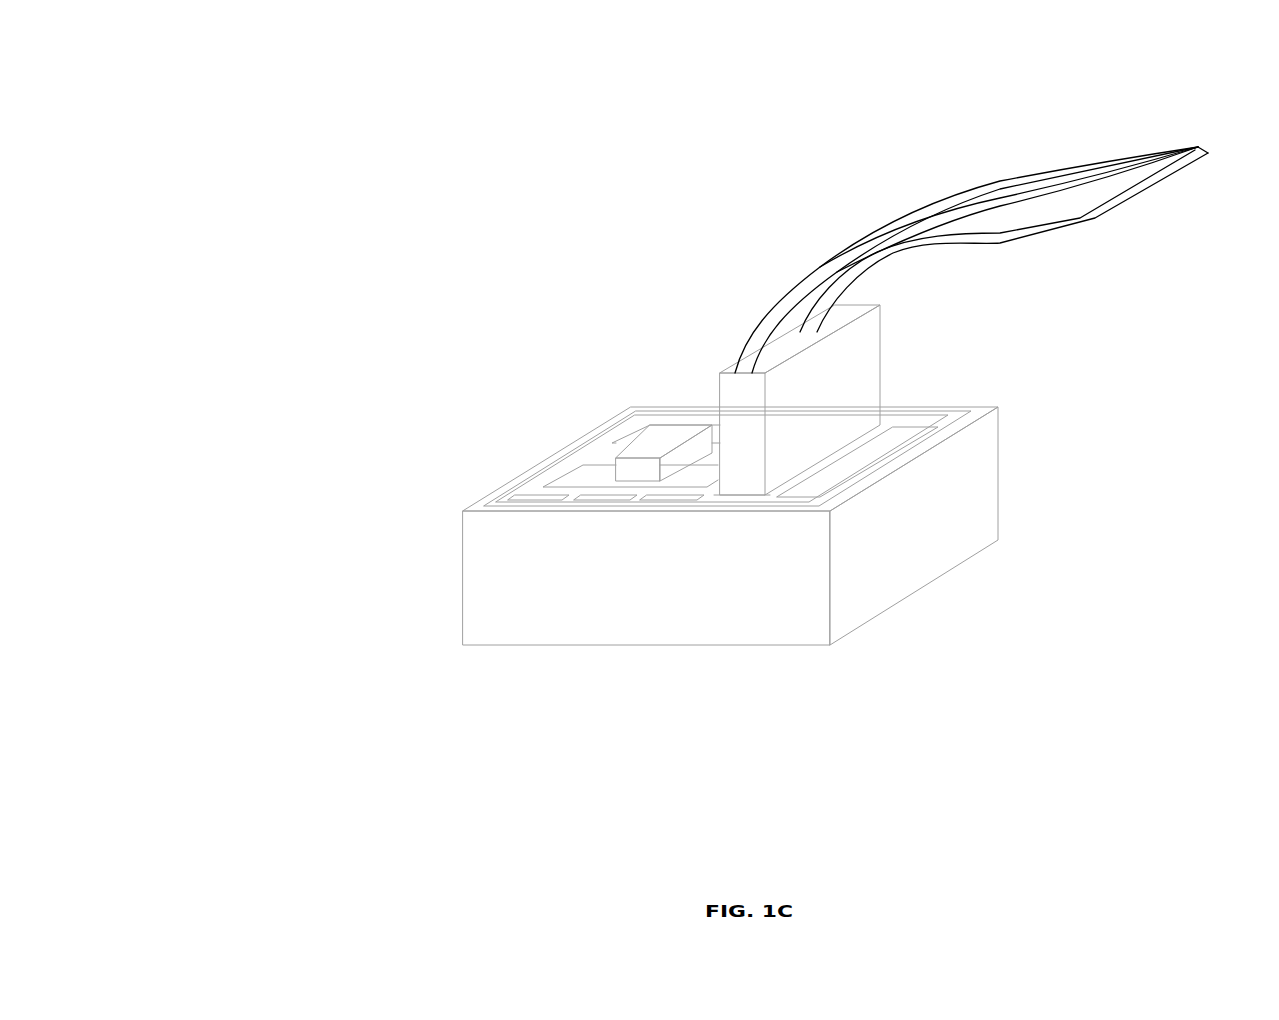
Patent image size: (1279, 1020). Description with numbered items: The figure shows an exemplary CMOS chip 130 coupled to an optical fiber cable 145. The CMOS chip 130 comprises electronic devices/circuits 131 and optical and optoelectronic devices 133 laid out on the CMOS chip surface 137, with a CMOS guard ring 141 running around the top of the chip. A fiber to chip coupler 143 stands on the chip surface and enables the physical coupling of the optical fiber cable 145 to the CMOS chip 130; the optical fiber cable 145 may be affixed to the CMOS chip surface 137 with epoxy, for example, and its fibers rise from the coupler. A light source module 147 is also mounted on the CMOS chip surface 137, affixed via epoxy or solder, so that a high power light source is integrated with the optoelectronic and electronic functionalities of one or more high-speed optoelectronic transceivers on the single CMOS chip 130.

The CMOS chip 130 is at (320, 95).
The electronic devices/circuits 131 is at (913, 430).
The optical and optoelectronic devices 133 is at (570, 464).
The CMOS chip surface 137 is at (598, 446).
The CMOS guard ring 141 is at (982, 478).
The fiber to chip coupler 143 is at (881, 334).
The optical fiber cable 145 is at (913, 198).
The light source module 147 is at (657, 417).